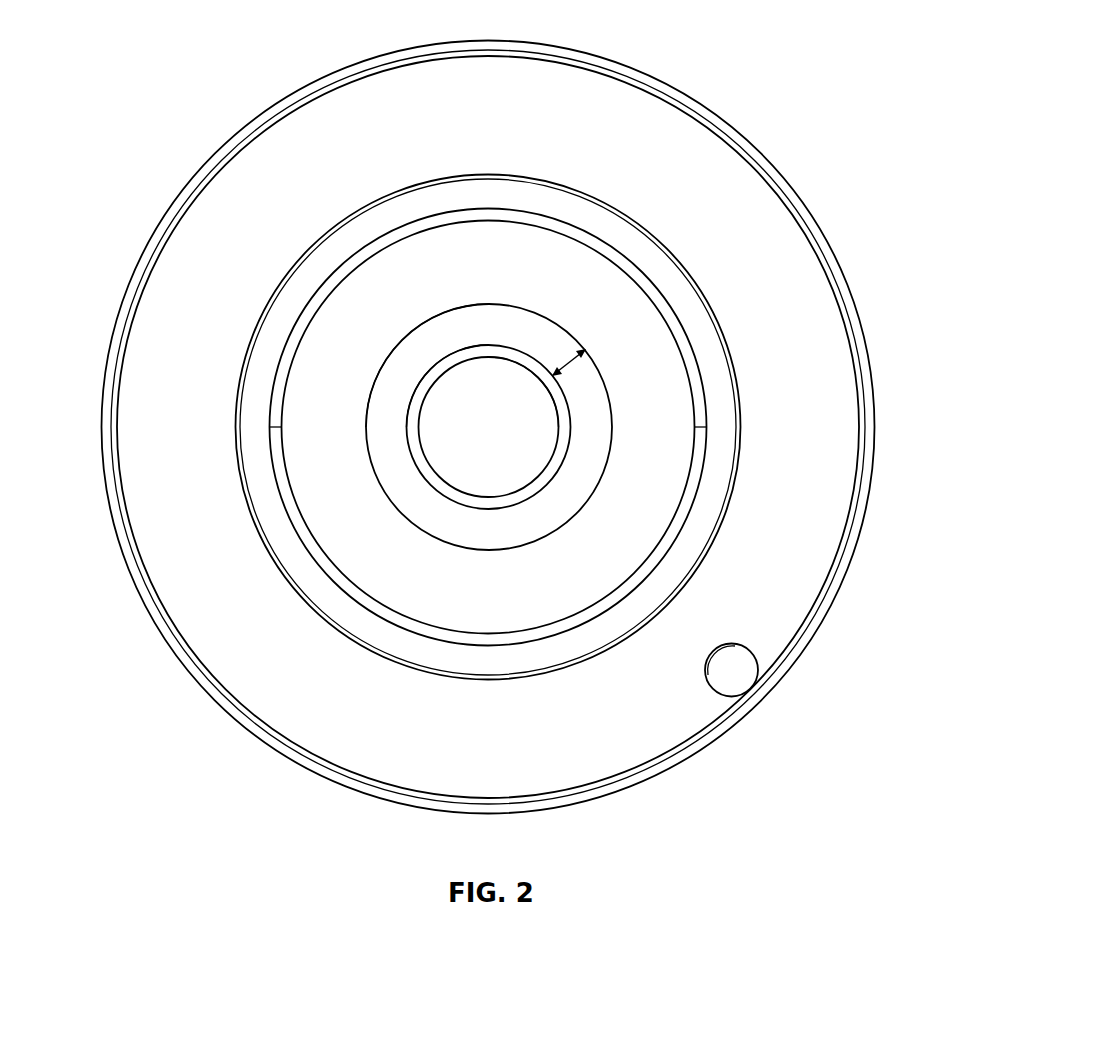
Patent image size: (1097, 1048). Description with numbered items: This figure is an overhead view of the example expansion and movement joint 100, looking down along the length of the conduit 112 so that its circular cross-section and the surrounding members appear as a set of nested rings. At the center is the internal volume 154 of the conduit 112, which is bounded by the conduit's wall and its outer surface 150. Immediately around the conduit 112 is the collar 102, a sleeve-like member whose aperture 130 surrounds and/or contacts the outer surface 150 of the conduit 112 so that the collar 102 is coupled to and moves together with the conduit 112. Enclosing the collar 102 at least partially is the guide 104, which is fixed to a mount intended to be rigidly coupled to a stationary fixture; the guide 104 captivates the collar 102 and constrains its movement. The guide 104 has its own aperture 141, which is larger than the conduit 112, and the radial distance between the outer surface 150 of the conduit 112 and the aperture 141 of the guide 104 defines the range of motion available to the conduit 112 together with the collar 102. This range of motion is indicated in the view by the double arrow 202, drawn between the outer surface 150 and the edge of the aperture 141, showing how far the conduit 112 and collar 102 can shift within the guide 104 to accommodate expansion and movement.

The expansion and movement joint 100 is at (868, 60).
The collar 102 is at (388, 447).
The guide 104 is at (700, 450).
The conduit 112 is at (517, 358).
The aperture of the collar 130 is at (472, 350).
The aperture of the guide 141 is at (387, 497).
The outer surface 150 is at (423, 377).
The internal volume 154 is at (510, 438).
The double arrow 202 is at (570, 370).